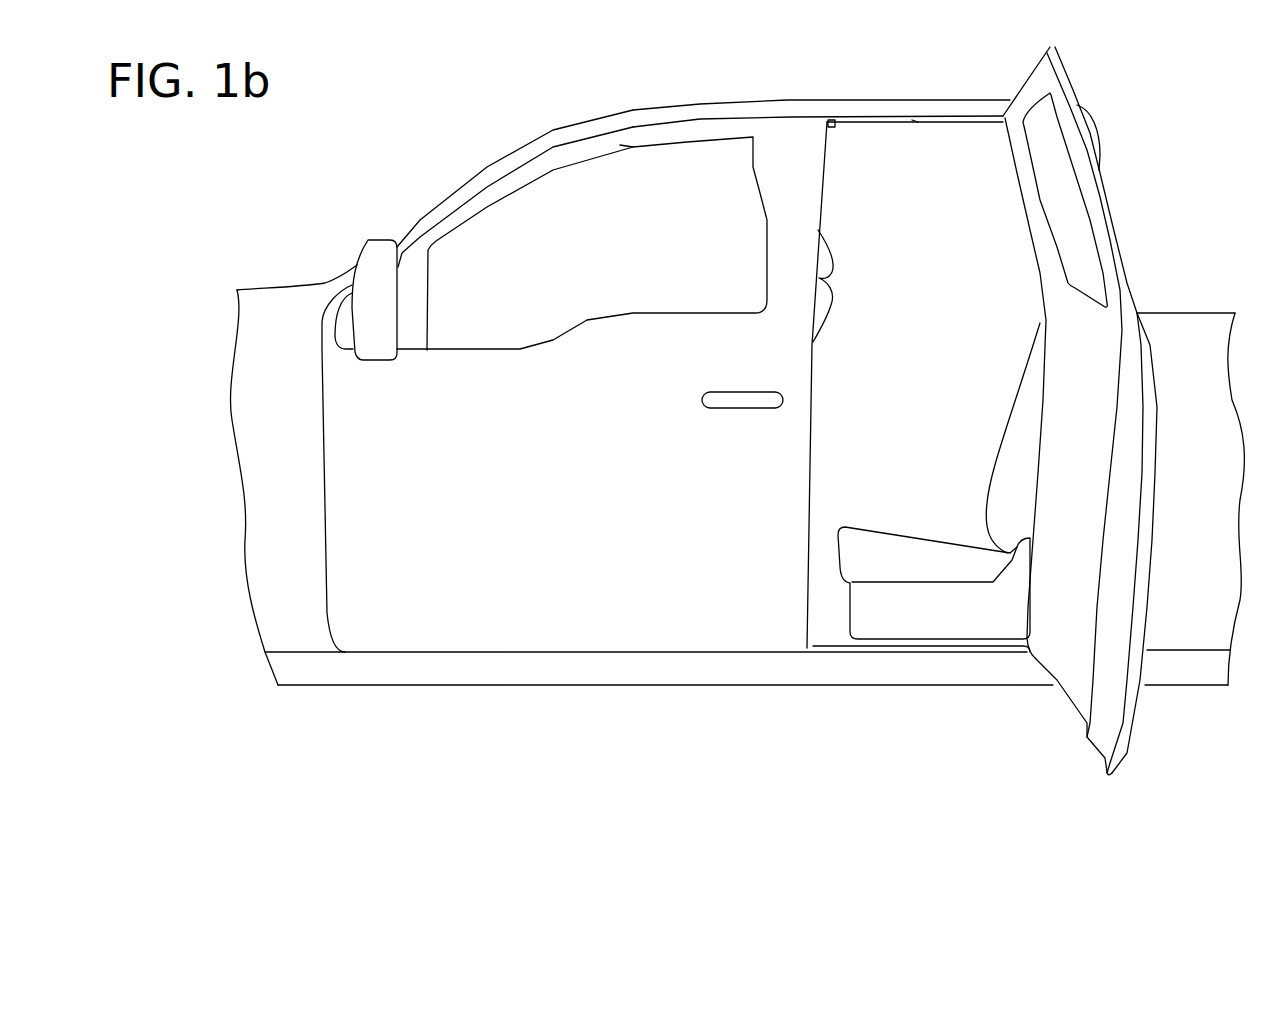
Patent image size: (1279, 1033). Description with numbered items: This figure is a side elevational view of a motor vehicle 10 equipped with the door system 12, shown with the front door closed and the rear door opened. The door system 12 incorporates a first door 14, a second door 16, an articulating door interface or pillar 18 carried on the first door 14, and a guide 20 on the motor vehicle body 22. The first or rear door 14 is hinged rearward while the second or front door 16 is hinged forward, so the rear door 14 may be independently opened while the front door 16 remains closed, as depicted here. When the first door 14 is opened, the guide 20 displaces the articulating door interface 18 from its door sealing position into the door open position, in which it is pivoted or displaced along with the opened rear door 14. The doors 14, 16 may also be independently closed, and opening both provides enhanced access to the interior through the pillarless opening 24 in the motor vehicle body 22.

The motor vehicle 10 is at (505, 111).
The door system 12 is at (296, 721).
The first door 14 is at (1058, 411).
The second door 16 is at (500, 617).
The articulating door interface 18 is at (1087, 148).
The guide 20 is at (835, 137).
The motor vehicle body 22 is at (788, 100).
The pillarless opening 24 is at (912, 120).